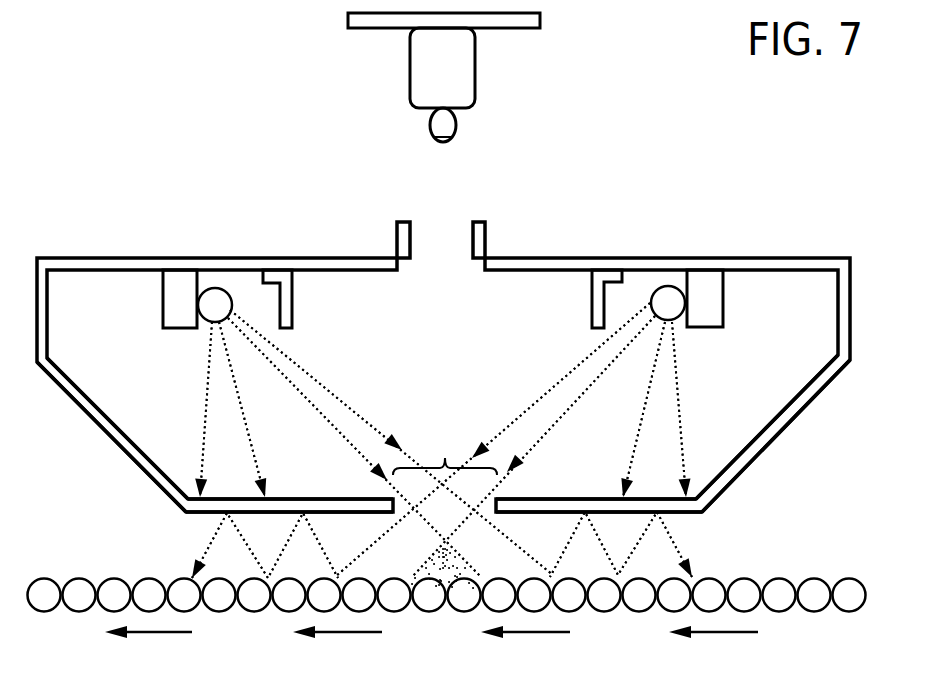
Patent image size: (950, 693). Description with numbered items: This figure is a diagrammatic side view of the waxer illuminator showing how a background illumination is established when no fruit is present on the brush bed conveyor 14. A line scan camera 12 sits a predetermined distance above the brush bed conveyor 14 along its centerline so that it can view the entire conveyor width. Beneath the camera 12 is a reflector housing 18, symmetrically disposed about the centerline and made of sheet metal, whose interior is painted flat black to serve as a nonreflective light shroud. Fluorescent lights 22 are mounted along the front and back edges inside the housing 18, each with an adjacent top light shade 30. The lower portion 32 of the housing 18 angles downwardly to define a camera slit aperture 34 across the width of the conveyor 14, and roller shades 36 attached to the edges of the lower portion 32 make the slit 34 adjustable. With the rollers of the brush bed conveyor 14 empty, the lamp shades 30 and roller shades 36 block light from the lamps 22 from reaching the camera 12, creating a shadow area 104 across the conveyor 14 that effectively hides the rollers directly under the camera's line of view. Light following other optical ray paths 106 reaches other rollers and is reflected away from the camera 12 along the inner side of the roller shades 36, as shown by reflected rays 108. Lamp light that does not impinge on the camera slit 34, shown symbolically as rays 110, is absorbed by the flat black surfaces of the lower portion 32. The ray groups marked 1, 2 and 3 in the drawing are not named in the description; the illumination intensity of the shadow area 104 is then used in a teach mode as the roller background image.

The camera 12 is at (457, 125).
The brush bed conveyor 14 is at (398, 608).
The reflector housing 18 is at (35, 285).
The fluorescent lights 22 is at (214, 297).
The top light shade 30 is at (292, 305).
The lower portion of housing 32 is at (107, 436).
The camera slit aperture 34 is at (445, 451).
The roller shades 36 is at (330, 498).
The shadow area 104 is at (450, 572).
The optical ray paths 106 is at (300, 354).
The reflected rays 108 is at (213, 541).
The rays 110 is at (241, 412).
The light ray type 1 is at (444, 446).
The light ray type 2 is at (440, 441).
The light ray type 3 is at (446, 545).